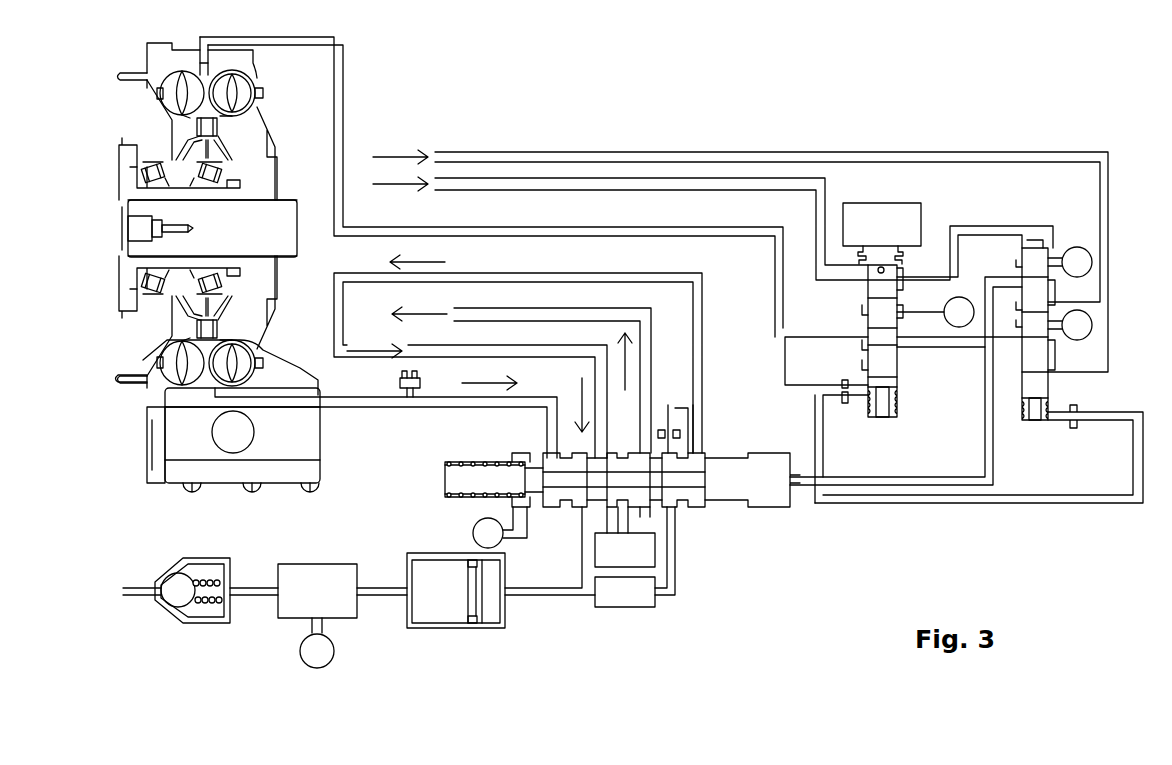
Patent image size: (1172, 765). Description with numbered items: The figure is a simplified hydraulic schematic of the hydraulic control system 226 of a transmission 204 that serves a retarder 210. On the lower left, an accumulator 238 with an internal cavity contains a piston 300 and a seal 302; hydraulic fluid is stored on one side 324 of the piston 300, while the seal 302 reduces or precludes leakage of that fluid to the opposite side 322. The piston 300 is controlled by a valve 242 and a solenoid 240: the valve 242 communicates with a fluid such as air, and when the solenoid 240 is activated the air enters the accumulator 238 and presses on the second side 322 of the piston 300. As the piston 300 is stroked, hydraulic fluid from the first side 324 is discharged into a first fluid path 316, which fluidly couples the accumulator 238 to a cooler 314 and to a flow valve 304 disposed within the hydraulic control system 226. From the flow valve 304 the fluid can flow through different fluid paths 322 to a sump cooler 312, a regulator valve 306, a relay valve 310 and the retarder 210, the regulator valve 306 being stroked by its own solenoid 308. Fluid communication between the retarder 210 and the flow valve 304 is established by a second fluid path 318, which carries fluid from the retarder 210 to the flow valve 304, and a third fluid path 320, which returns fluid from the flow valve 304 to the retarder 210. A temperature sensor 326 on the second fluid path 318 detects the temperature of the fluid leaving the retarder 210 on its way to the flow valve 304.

The transmission 204 is at (137, 119).
The retarder 210 is at (137, 433).
The hydraulic control system 226 is at (792, 96).
The accumulator 238 is at (425, 630).
The solenoid 240 is at (315, 564).
The valve 242 is at (208, 623).
The piston 300 is at (480, 600).
The seal 302 is at (476, 628).
The flow valve 304 is at (447, 505).
The regulator valve 306 is at (905, 385).
The solenoid 308 is at (921, 210).
The relay valve 310 is at (1078, 392).
The sump cooler 312 is at (648, 549).
The cooler 314 is at (625, 605).
The first fluid path 316 is at (557, 598).
The second fluid path 318 is at (435, 400).
The third fluid path 320 is at (538, 273).
The fluid paths / second side of piston 322 is at (603, 419).
The first side of piston 324 is at (492, 572).
The temperature sensor 326 is at (400, 383).